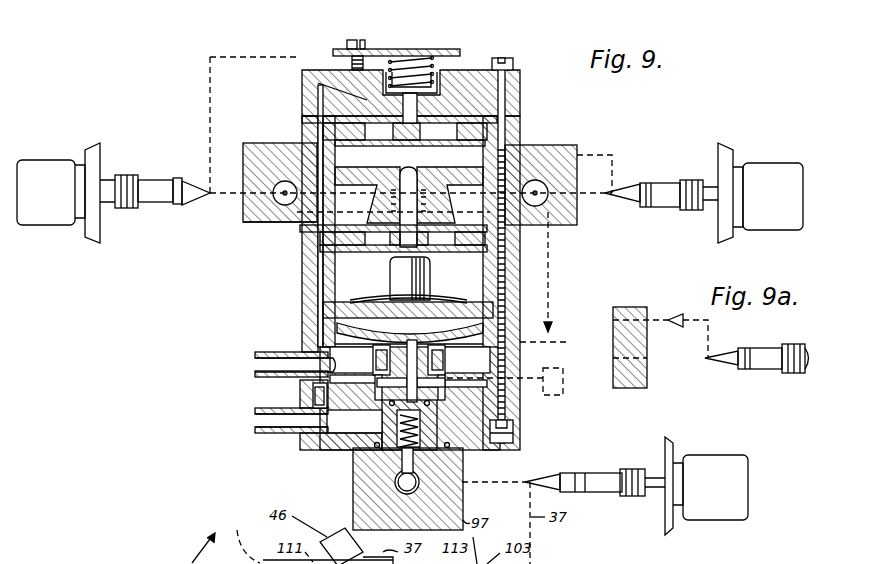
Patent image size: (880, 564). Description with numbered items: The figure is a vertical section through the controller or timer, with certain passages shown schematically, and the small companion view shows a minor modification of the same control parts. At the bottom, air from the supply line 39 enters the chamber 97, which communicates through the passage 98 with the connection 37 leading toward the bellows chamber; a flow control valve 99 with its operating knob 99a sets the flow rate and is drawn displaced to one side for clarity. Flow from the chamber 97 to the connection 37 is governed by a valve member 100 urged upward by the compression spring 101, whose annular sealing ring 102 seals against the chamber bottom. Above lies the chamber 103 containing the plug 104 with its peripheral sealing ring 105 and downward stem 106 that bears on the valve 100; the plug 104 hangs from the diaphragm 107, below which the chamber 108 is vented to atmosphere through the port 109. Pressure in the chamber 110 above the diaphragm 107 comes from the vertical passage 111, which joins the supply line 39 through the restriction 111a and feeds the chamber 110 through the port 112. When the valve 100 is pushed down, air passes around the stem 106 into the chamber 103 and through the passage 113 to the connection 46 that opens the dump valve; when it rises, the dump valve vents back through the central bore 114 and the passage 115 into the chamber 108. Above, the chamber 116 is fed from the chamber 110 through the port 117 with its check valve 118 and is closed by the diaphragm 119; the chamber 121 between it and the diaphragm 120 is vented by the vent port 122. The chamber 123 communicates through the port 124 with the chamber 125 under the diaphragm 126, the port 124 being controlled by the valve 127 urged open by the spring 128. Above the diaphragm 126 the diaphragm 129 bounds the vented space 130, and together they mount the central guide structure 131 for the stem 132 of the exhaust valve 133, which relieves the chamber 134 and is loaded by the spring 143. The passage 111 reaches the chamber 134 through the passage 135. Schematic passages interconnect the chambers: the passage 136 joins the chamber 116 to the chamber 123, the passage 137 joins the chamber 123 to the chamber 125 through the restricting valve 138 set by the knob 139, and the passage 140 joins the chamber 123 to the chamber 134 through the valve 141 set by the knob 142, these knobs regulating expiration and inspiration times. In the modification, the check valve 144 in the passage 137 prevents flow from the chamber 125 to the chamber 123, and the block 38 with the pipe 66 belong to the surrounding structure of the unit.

In FIG. 9, the connection 37 is at (400, 487).
In FIG. 9A, the valve body block 38 is at (633, 307).
In FIG. 9, the air supply line 39 is at (260, 422).
In FIG. 9, the connection 46 is at (563, 379).
In FIG. 9, the inlet pipe 66 is at (257, 358).
In FIG. 9, the chamber 97 is at (385, 445).
In FIG. 9, the passage 98 is at (413, 458).
In FIG. 9, the flow control valve 99 is at (597, 490).
In FIG. 9, the operating knob 99a is at (727, 519).
In FIG. 9, the valve member 100 is at (515, 445).
In FIG. 9, the compression spring 101 is at (367, 468).
In FIG. 9, the annular sealing ring 102 is at (380, 450).
In FIG. 9, the chamber 103 is at (503, 407).
In FIG. 9, the plug 104 is at (445, 360).
In FIG. 9, the peripheral sealing ring 105 is at (445, 346).
In FIG. 9, the stem 106 is at (500, 420).
In FIG. 9, the diaphragm 107 is at (487, 327).
In FIG. 9, the chamber 108 is at (340, 343).
In FIG. 9, the port 109 is at (520, 342).
In FIG. 9, the chamber 110 is at (340, 327).
In FIG. 9, the passage 111 is at (302, 267).
In FIG. 9, the restriction 111a is at (316, 395).
In FIG. 9, the port 112 is at (335, 310).
In FIG. 9, the passage 113 is at (520, 394).
In FIG. 9, the central bore 114 is at (302, 384).
In FIG. 9, the passage 115 is at (487, 297).
In FIG. 9, the chamber 116 is at (470, 275).
In FIG. 9, the port 117 is at (322, 292).
In FIG. 9, the check valve 118 is at (358, 300).
In FIG. 9, the diaphragm 119 is at (500, 262).
In FIG. 9, the diaphragm 120 is at (243, 212).
In FIG. 9, the chamber 121 is at (300, 228).
In FIG. 9, the vent port 122 is at (302, 243).
In FIG. 9, the chamber 123 is at (563, 144).
In FIG. 9, the port 124 is at (517, 143).
In FIG. 9, the chamber 125 is at (347, 153).
In FIG. 9, the diaphragm 126 is at (492, 132).
In FIG. 9, the valve 127 is at (380, 188).
In FIG. 9, the spring 128 is at (383, 204).
In FIG. 9, the diaphragm 129 is at (490, 70).
In FIG. 9, the vented space 130 is at (373, 125).
In FIG. 9, the central guide structure 131 is at (502, 105).
In FIG. 9, the stem 132 is at (455, 108).
In FIG. 9, the exhaust valve 133 is at (410, 77).
In FIG. 9, the chamber 134 is at (380, 98).
In FIG. 9, the passage 135 is at (372, 110).
In FIG. 9, the passage 136 is at (552, 258).
In FIG. 9, the passage 137 is at (612, 155).
In FIG. 9A, the passage 137 is at (675, 360).
In FIG. 9, the restricting valve 138 is at (618, 187).
In FIG. 9A, the restricting valve 138 is at (728, 366).
In FIG. 9, the knob 139 is at (770, 163).
In FIG. 9, the passage 140 is at (208, 58).
In FIG. 9, the valve 141 is at (193, 197).
In FIG. 9, the knob 142 is at (38, 227).
In FIG. 9, the spring 143 is at (393, 67).
In FIG. 9A, the check valve 144 is at (676, 313).